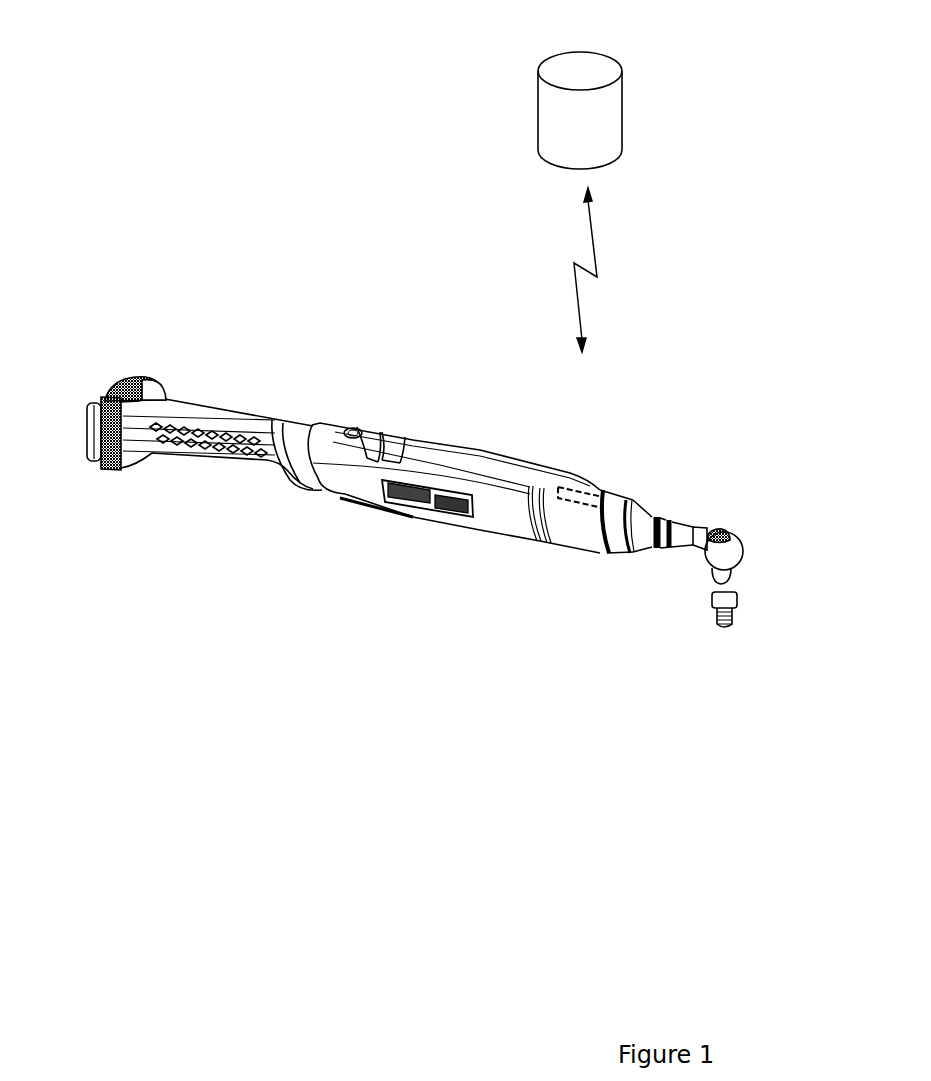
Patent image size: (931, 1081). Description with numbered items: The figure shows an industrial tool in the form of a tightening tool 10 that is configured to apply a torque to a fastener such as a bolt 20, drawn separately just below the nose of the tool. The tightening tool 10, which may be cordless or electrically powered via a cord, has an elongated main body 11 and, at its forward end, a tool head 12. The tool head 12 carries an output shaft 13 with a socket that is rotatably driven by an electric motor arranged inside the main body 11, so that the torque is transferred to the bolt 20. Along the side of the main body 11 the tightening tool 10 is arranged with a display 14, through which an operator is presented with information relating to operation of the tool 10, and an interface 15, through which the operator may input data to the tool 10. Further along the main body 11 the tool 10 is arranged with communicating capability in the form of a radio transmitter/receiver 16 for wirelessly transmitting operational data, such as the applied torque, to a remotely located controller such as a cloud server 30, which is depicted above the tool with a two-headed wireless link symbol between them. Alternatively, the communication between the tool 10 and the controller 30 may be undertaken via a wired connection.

The tightening tool 10 is at (475, 428).
The main body 11 is at (494, 449).
The tool head 12 is at (721, 533).
The output shaft 13 is at (712, 578).
The display 14 is at (447, 510).
The interface 15 is at (400, 497).
The radio transmitter/receiver 16 is at (585, 490).
The bolt 20 is at (728, 590).
The cloud server 30 is at (598, 73).